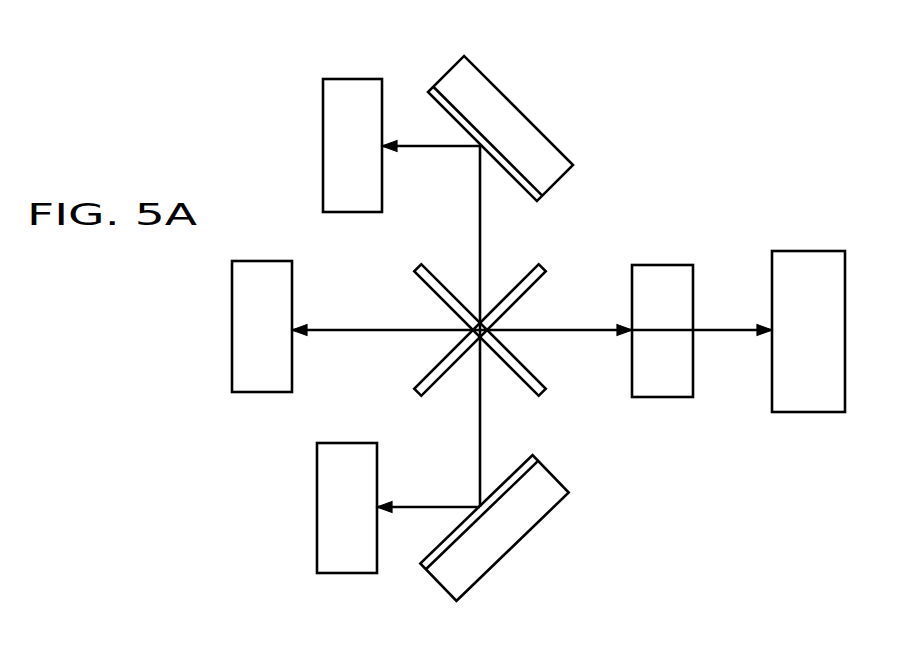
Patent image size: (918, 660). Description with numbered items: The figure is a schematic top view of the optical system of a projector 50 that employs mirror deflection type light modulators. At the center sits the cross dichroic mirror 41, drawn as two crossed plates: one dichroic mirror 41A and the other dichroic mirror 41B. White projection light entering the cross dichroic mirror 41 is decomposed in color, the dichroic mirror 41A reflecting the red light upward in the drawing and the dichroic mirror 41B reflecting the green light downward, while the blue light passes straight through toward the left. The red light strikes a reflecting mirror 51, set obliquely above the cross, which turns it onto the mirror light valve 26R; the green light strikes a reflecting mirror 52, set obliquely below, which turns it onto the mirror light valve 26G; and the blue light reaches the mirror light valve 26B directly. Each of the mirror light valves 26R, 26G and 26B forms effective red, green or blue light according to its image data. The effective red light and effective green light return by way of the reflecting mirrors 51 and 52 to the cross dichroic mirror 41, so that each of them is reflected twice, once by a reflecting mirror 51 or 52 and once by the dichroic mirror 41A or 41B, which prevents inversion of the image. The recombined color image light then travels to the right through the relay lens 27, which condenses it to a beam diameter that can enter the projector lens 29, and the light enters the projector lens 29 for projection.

The mirror light valve 26R is at (347, 95).
The mirror light valve 26G is at (335, 534).
The mirror light valve 26B is at (252, 375).
The relay lens 27 is at (667, 282).
The projector lens 29 is at (818, 272).
The cross dichroic mirror 41 is at (524, 303).
The dichroic mirror 41A is at (530, 288).
The dichroic mirror 41B is at (535, 370).
The projector 50 is at (845, 500).
The reflecting mirror 51 is at (523, 148).
The reflecting mirror 52 is at (520, 510).